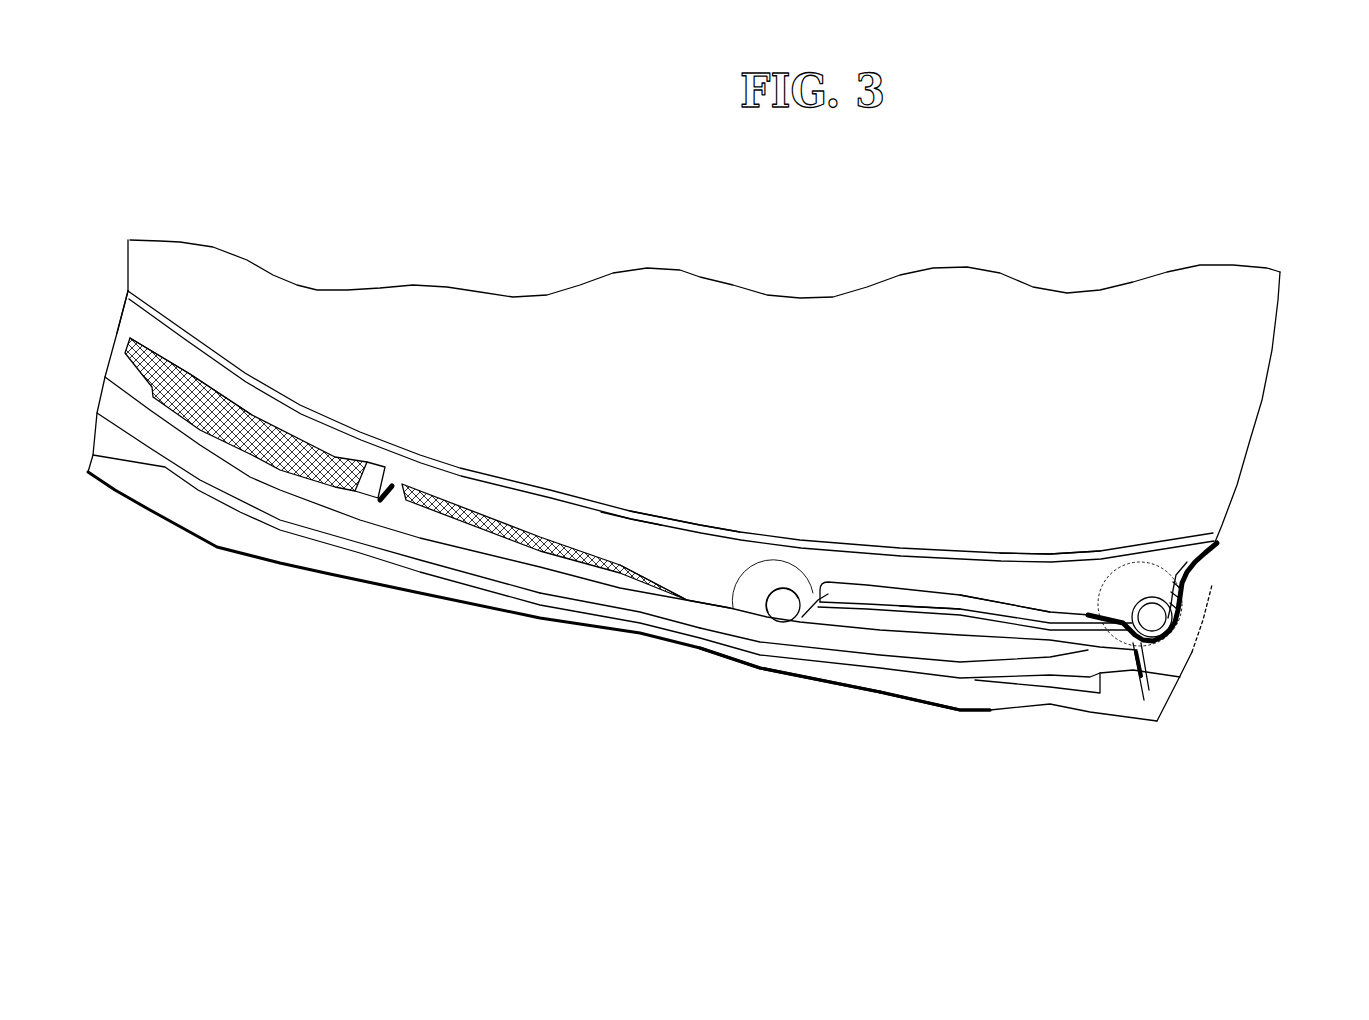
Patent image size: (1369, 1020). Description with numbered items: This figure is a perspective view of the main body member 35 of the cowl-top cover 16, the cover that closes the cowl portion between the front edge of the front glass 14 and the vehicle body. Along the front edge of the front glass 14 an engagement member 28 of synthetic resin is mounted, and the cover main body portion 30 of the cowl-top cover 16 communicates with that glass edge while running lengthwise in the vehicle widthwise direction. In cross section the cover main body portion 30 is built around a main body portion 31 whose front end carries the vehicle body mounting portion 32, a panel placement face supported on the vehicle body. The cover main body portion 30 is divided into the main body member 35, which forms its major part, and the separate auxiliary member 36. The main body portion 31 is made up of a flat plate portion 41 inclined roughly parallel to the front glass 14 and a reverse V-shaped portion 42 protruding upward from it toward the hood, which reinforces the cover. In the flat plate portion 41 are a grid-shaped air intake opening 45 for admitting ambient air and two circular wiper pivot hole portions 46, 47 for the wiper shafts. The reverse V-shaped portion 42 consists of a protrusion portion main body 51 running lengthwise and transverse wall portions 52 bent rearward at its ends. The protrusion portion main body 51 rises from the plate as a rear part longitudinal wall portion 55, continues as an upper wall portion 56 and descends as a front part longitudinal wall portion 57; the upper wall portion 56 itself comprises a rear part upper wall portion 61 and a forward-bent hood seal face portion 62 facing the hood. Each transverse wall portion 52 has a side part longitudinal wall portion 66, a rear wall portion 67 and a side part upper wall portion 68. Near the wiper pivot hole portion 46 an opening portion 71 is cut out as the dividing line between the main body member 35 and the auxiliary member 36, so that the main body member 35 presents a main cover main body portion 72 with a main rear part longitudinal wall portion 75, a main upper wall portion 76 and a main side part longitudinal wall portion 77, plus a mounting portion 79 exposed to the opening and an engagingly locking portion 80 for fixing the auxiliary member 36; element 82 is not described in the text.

The front glass 14 is at (722, 393).
The cowl-top cover 16 is at (1195, 738).
The engagement member 28 is at (671, 426).
The cover main body portion 30 is at (1050, 527).
The main body portion 31 is at (685, 501).
The vehicle body mounting portion 32 is at (622, 549).
The main body member 35 is at (935, 728).
The auxiliary member 36 is at (1213, 682).
The flat plate portion 41 is at (975, 564).
The reverse V-shaped portion 42 is at (800, 550).
The air intake opening 45 is at (389, 447).
The one wiper pivot hole portion 46 is at (1133, 561).
The other wiper pivot hole portion 47 is at (772, 543).
The protrusion portion main body 51 is at (1037, 701).
The transverse wall portion 52 is at (658, 471).
The rear part longitudinal wall portion 55 is at (999, 555).
The upper wall portion 56 is at (636, 578).
The front part longitudinal wall portion 57 is at (790, 691).
The rear part upper wall portion 61 is at (427, 473).
The hood seal face portion 62 is at (620, 640).
The side part longitudinal wall portion 66 is at (191, 349).
The rear wall portion 67 is at (1233, 543).
The side part upper wall portion 68 is at (93, 311).
The opening portion 71 is at (1186, 587).
The main cover main body portion 72 is at (631, 491).
The main rear part longitudinal wall portion 75 is at (930, 554).
The main upper wall portion 76 is at (894, 691).
The main side part longitudinal wall portion 77 is at (1140, 565).
The mounting portion 79 is at (1127, 708).
The engagingly locking portion 80 is at (1226, 590).
The lower flange 82 is at (318, 540).